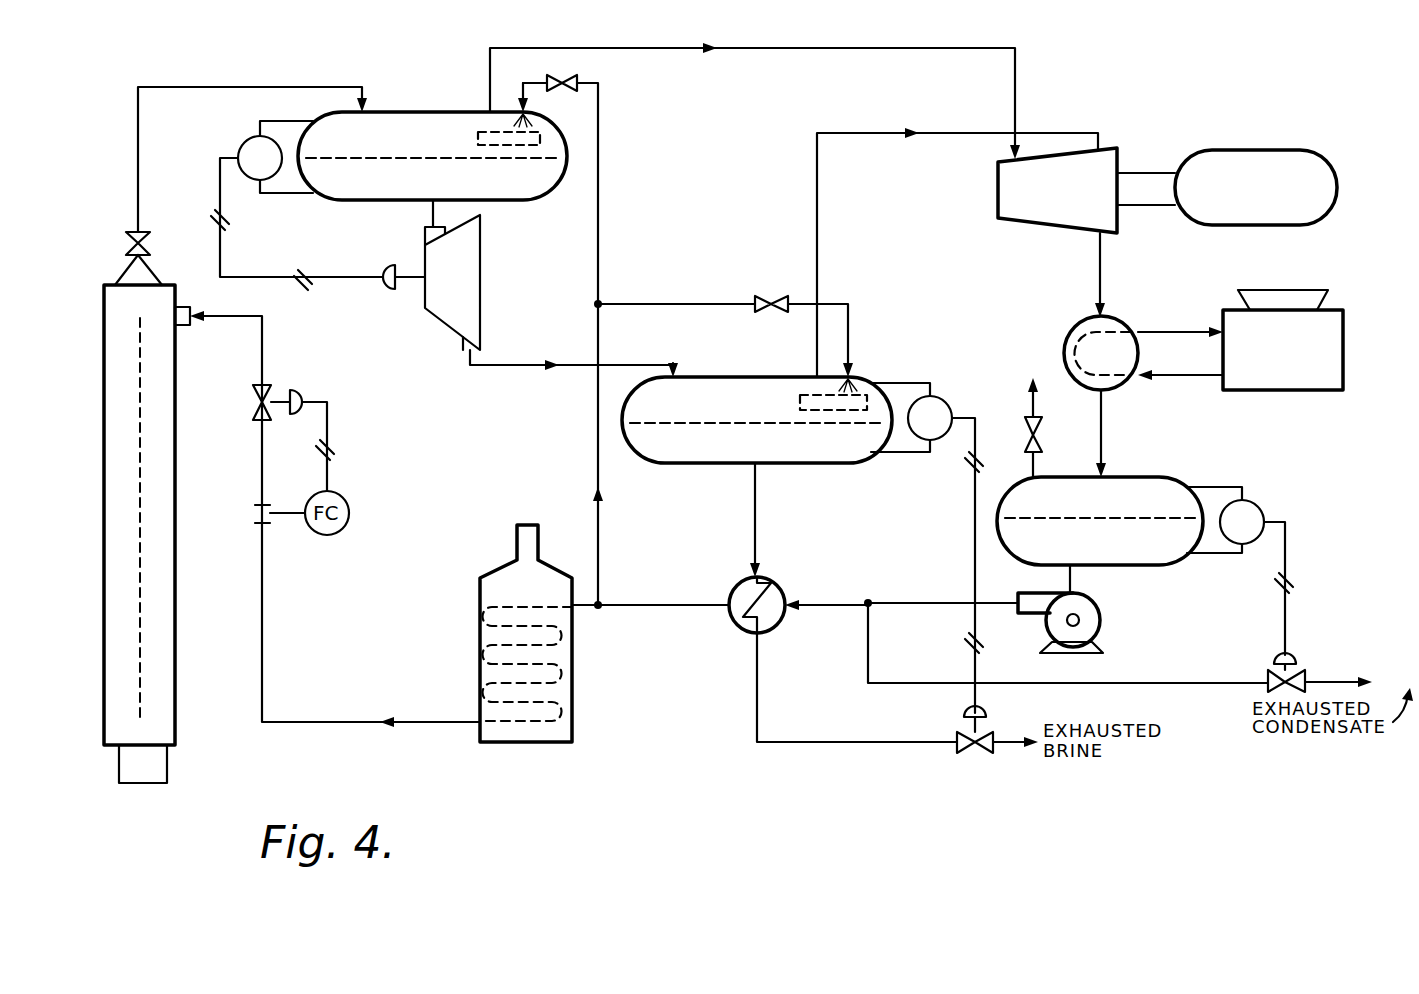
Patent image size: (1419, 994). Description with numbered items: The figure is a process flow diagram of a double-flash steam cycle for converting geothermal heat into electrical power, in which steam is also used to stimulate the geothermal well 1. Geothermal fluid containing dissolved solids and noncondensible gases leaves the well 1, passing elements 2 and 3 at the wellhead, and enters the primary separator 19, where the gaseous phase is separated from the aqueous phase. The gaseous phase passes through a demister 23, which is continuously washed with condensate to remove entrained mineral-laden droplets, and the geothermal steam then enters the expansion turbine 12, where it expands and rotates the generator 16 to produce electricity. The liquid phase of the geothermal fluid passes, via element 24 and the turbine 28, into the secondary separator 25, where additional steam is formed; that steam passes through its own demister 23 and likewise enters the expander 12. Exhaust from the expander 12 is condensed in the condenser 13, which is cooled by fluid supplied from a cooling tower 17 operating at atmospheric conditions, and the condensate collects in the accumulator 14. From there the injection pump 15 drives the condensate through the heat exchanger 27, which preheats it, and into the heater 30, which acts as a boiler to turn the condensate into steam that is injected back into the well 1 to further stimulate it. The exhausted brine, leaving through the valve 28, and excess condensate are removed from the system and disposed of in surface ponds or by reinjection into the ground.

The geothermal well 1 is at (177, 383).
The expansion nozzle 2 is at (160, 272).
The feed valve 3 is at (152, 248).
The expansion turbine 12 is at (998, 190).
The condenser 13 is at (1068, 337).
The accumulator 14 is at (1135, 477).
The injection pump 15 is at (1097, 605).
The electrical generator 16 is at (1278, 150).
The cooling tower 17 is at (1343, 340).
The flash separator 19 is at (395, 110).
The demister 23 is at (487, 128).
The compressor 24 is at (481, 280).
The secondary separator 25 is at (742, 375).
The heat exchanger 27 is at (740, 630).
The turbine 28 is at (968, 752).
The heater 30 is at (572, 703).